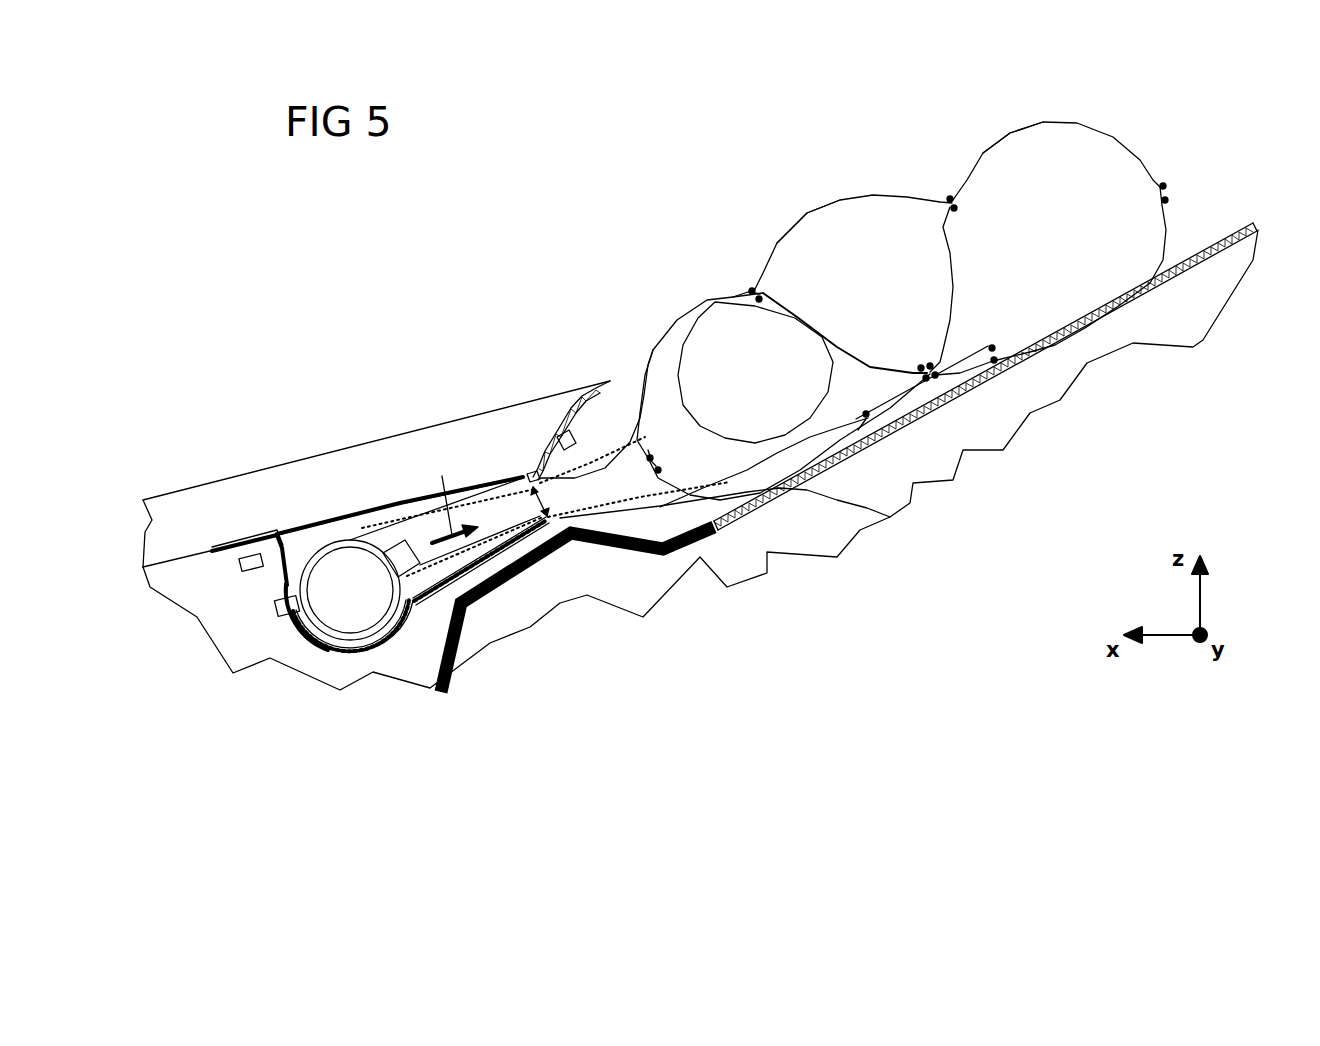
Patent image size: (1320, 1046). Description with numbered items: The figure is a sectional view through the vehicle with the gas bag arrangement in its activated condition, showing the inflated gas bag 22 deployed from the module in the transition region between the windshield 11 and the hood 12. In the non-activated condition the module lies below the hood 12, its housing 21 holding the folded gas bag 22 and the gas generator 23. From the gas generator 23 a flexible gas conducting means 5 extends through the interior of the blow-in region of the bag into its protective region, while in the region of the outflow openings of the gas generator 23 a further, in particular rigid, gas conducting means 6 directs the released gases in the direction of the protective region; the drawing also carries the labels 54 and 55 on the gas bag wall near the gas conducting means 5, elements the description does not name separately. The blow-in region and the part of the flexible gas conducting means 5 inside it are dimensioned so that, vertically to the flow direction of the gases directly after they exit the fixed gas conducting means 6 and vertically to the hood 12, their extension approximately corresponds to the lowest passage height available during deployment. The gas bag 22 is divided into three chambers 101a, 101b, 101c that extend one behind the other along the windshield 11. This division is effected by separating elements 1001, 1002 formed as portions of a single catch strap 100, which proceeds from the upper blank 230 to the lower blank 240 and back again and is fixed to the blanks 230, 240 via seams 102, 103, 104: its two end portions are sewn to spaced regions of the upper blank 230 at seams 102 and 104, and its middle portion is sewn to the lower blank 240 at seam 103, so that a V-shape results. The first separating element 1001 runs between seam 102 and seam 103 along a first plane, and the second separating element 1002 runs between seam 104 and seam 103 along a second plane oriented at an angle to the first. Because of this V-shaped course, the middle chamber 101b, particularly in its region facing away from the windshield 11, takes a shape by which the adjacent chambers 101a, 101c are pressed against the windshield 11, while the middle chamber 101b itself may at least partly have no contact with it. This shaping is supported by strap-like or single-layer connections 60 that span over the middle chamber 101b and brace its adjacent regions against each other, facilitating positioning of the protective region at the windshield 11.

The flexible gas conducting means 5 is at (685, 458).
The further gas conducting means 6 is at (407, 560).
The windshield 11 is at (905, 430).
The hood 12 is at (379, 466).
The housing 21 is at (305, 660).
The gas bag 22 is at (999, 118).
The gas generator 23 is at (353, 617).
The seam 54 is at (727, 293).
The partition 55 is at (808, 322).
The connections 60 is at (972, 378).
The catch strap 100 is at (881, 338).
The chamber 101a is at (660, 360).
The middle chamber 101b is at (863, 223).
The chamber 101c is at (1107, 160).
The seam 102 is at (753, 287).
The seam 103 is at (973, 380).
The seam 104 is at (951, 199).
The upper blank 230 is at (807, 212).
The lower blank 240 is at (1048, 333).
The first separating element 1001 is at (853, 357).
The second separating element 1002 is at (955, 283).